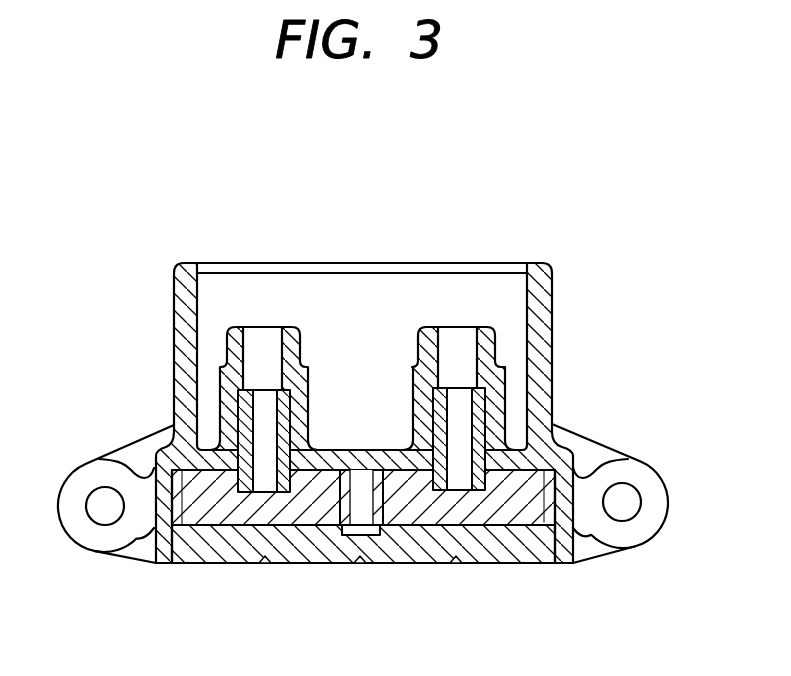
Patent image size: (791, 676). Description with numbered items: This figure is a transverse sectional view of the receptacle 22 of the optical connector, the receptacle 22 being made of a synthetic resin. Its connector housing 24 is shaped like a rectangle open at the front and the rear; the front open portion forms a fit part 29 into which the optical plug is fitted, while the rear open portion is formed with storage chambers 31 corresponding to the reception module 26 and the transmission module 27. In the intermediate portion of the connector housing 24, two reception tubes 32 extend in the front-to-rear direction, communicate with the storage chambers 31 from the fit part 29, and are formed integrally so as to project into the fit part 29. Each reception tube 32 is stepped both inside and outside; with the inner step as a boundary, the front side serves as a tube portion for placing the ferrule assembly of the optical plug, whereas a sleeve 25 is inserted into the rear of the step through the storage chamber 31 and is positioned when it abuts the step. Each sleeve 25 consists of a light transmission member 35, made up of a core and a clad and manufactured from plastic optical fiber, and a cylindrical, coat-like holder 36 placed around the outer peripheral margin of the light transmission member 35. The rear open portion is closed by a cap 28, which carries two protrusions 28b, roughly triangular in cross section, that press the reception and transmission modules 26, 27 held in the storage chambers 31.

The receptacle 22 is at (552, 318).
The connector housing 24 is at (173, 303).
The sleeve 25 is at (362, 318).
The reception module 26 is at (155, 478).
The transmission module 27 is at (533, 478).
The cap 28 is at (390, 558).
The protrusion 28b is at (263, 532).
The fit part 29 is at (364, 285).
The storage chamber 31 is at (180, 503).
The reception tube 32 is at (231, 328).
The light transmission member 35 is at (263, 412).
The holder 36 is at (260, 377).